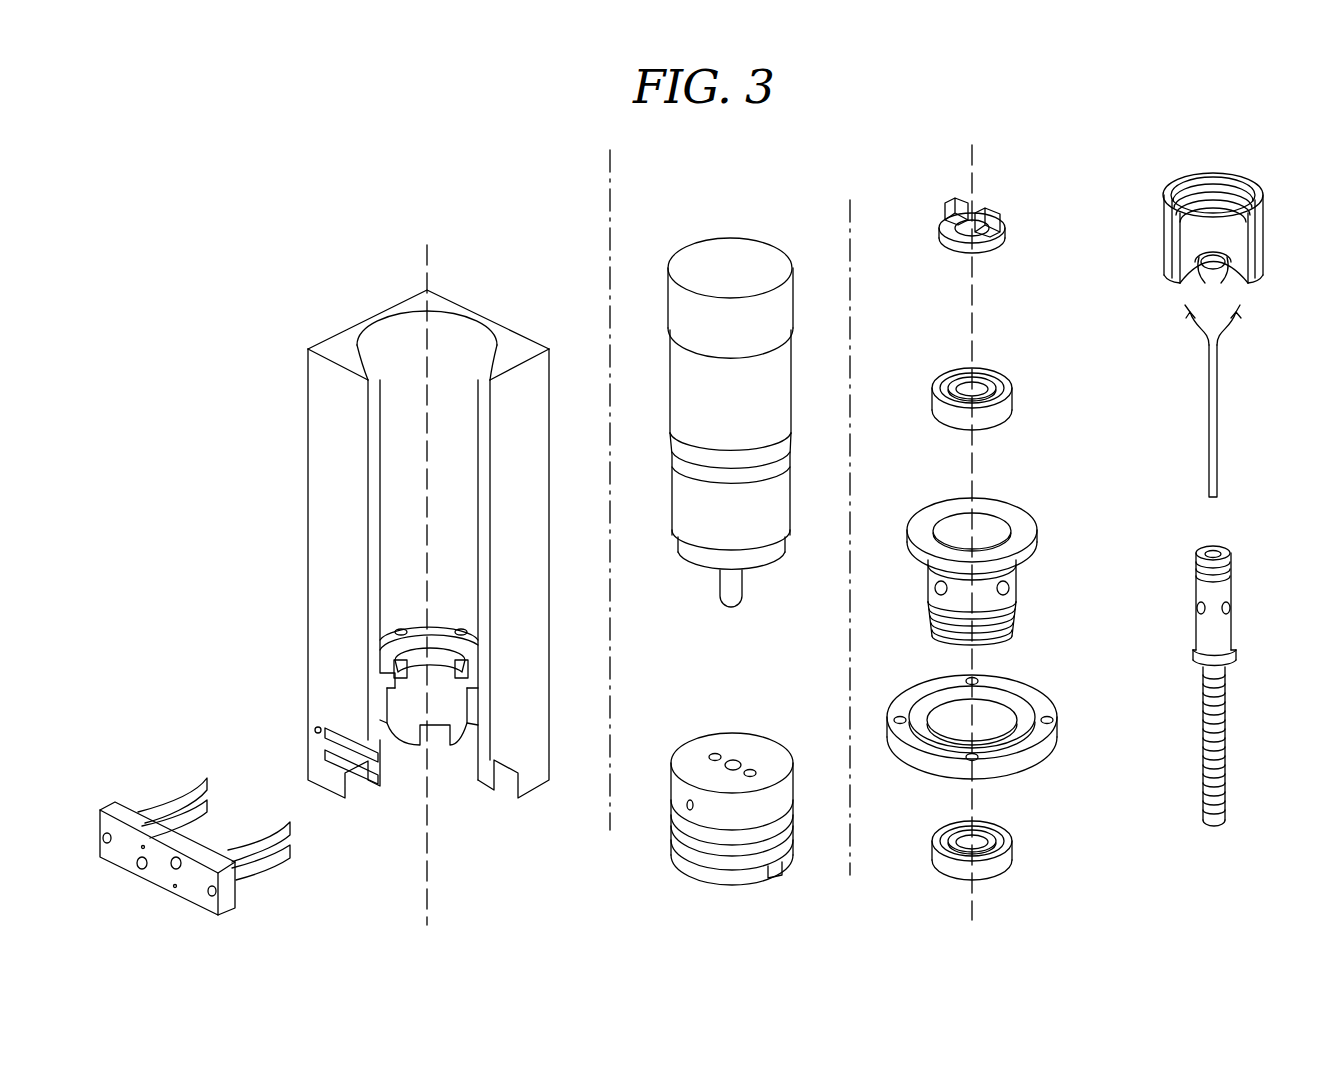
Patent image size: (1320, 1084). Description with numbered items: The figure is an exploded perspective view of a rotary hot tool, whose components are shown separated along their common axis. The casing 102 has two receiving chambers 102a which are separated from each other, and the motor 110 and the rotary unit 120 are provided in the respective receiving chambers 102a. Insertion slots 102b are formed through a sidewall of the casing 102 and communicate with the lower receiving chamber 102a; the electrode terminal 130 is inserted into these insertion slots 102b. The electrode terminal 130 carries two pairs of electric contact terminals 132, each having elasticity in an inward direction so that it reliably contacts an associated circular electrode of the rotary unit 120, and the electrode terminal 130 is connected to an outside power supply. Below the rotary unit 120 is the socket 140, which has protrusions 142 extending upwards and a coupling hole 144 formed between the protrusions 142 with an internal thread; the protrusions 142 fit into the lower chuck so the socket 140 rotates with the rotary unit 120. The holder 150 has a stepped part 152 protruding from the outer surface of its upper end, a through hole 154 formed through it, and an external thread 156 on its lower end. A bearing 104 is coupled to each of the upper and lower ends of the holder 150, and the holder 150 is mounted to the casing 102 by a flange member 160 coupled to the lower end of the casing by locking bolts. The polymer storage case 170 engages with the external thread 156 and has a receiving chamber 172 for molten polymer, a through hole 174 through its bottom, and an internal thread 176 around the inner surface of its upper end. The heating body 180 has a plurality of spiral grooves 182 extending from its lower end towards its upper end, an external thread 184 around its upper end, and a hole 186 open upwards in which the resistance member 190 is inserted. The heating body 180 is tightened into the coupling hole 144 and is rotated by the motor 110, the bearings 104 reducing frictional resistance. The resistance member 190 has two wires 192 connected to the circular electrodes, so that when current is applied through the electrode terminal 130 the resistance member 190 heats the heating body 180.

The casing 102 is at (318, 389).
The receiving chambers 102a is at (408, 579).
The insertion slots 102b is at (310, 752).
The bearing 104 is at (937, 410).
The motor 110 is at (710, 268).
The rotary unit 120 is at (677, 867).
The electrode terminal 130 is at (176, 890).
The electric contact terminals 132 is at (247, 837).
The socket 140 is at (940, 242).
The protrusions 142 is at (1000, 225).
The coupling hole 144 is at (968, 212).
The holder 150 is at (923, 587).
The stepped part 152 is at (1040, 528).
The through hole 154 is at (985, 528).
The external thread 156 is at (1017, 608).
The flange member 160 is at (940, 765).
The polymer storage case 170 is at (1172, 288).
The receiving chamber 172 is at (1166, 240).
The through hole 174 is at (1218, 277).
The internal thread 176 is at (1233, 187).
The heating body 180 is at (1192, 620).
The spiral grooves 182 is at (1230, 778).
The external thread 184 is at (1233, 573).
The hole 186 is at (1217, 550).
The resistance member 190 is at (1203, 435).
The wires 192 is at (1227, 332).